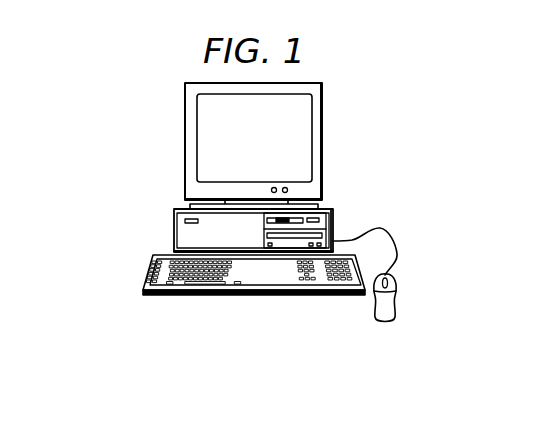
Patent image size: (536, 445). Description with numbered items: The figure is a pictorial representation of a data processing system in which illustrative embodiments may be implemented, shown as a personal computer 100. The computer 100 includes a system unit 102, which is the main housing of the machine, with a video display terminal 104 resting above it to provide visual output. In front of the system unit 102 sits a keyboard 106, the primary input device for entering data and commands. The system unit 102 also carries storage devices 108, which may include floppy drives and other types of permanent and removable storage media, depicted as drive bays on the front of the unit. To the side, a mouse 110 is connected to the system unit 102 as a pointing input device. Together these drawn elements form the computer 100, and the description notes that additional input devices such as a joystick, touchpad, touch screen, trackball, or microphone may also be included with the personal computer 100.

The computer 100 is at (123, 125).
The system unit 102 is at (174, 223).
The video display terminal 104 is at (323, 141).
The keyboard 106 is at (170, 296).
The storage devices 108 is at (316, 222).
The mouse 110 is at (385, 322).